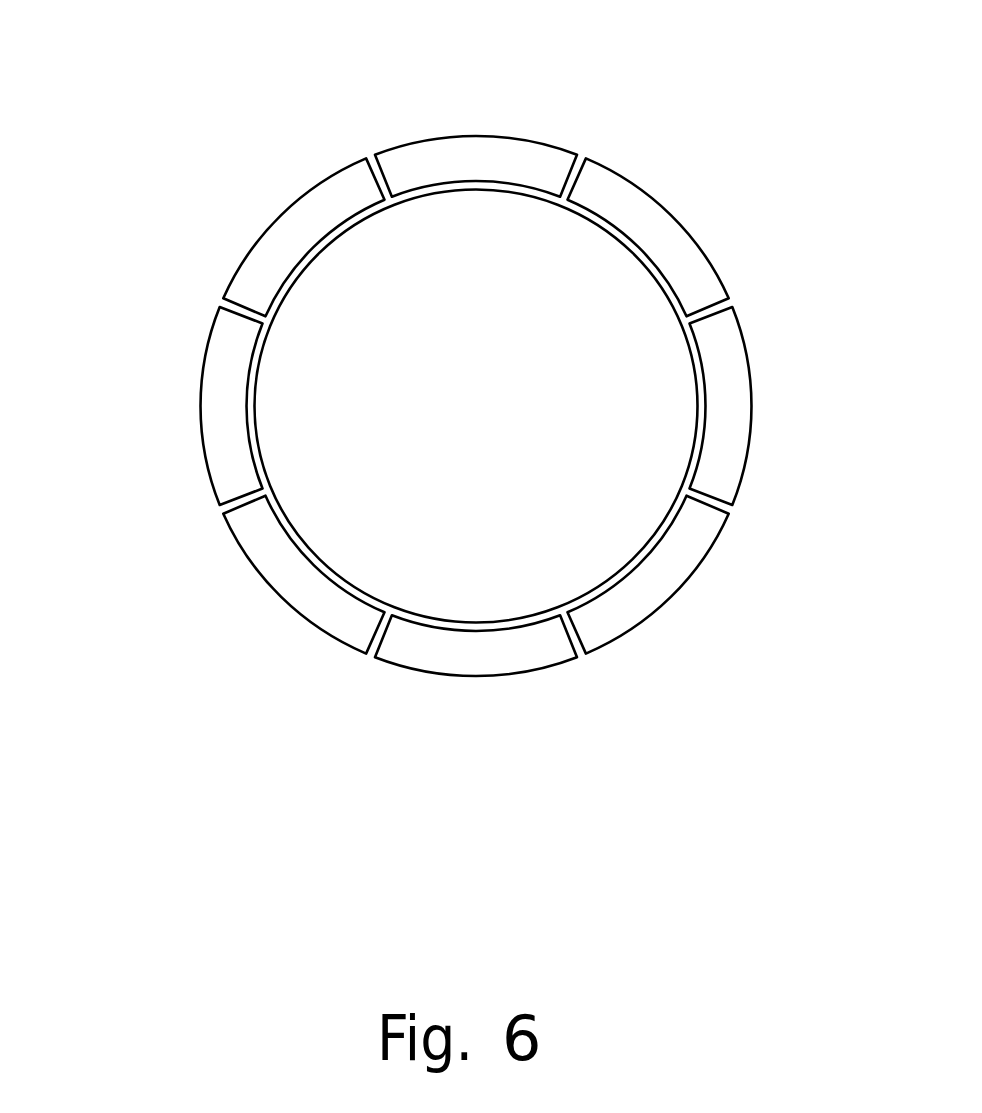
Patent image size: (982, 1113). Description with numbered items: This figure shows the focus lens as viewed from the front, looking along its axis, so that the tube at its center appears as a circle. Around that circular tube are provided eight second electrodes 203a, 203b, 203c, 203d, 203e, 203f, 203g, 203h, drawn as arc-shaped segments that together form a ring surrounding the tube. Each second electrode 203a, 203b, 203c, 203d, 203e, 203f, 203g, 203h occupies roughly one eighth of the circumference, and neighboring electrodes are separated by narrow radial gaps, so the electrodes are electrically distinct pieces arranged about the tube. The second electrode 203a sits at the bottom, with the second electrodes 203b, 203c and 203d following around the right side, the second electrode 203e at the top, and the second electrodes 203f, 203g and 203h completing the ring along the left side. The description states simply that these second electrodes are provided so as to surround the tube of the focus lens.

The second electrode 203a is at (454, 657).
The second electrode 203b is at (672, 572).
The second electrode 203c is at (733, 405).
The second electrode 203d is at (663, 243).
The second electrode 203e is at (487, 156).
The second electrode 203f is at (300, 237).
The second electrode 203g is at (218, 405).
The second electrode 203h is at (287, 575).